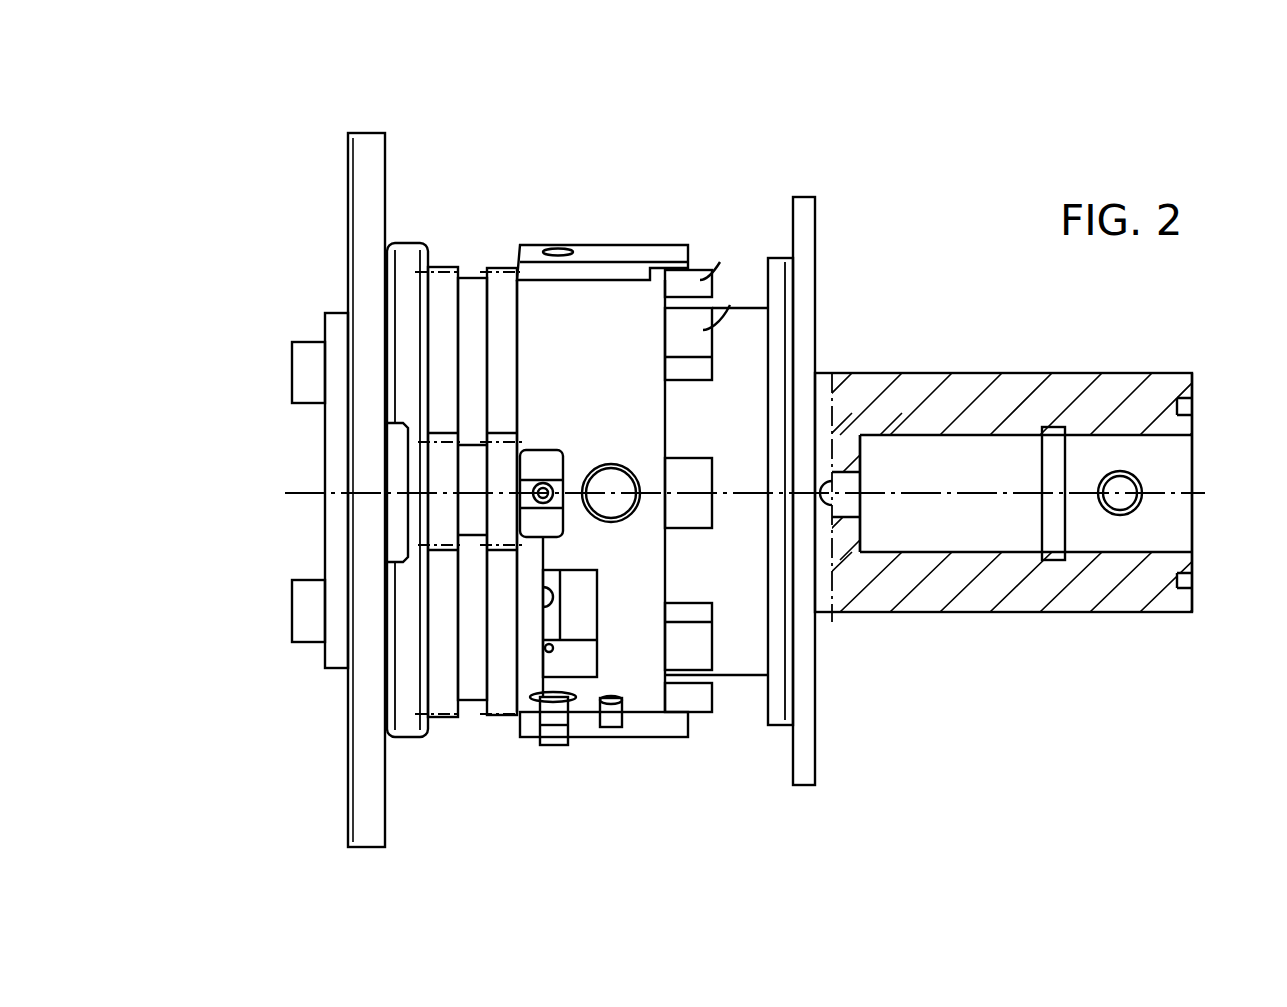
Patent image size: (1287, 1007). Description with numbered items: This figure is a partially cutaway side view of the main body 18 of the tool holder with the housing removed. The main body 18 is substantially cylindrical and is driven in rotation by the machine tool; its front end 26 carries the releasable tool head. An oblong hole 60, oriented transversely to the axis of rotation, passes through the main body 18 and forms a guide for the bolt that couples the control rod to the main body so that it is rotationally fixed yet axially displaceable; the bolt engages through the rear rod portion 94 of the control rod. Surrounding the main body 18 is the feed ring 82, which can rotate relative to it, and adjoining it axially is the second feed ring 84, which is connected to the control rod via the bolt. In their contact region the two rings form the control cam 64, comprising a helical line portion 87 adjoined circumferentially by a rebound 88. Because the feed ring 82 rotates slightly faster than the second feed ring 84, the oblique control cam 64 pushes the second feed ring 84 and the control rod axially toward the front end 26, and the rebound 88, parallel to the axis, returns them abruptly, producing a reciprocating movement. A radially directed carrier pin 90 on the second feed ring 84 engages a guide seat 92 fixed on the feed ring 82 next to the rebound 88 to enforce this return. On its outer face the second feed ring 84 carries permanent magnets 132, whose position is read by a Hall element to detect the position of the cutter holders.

The main body 18 is at (330, 304).
The front end 26 is at (1193, 567).
The oblong hole 60 is at (626, 478).
The control cam 64 is at (555, 327).
The feed ring 82 is at (527, 330).
The second feed ring 84 is at (610, 310).
The helical line portion 87 is at (550, 448).
The rebound 88 is at (567, 665).
The carrier pin 90 is at (600, 718).
The guide seat 92 is at (683, 278).
The rear rod portion 94 is at (852, 540).
The permanent magnets 132 is at (700, 370).